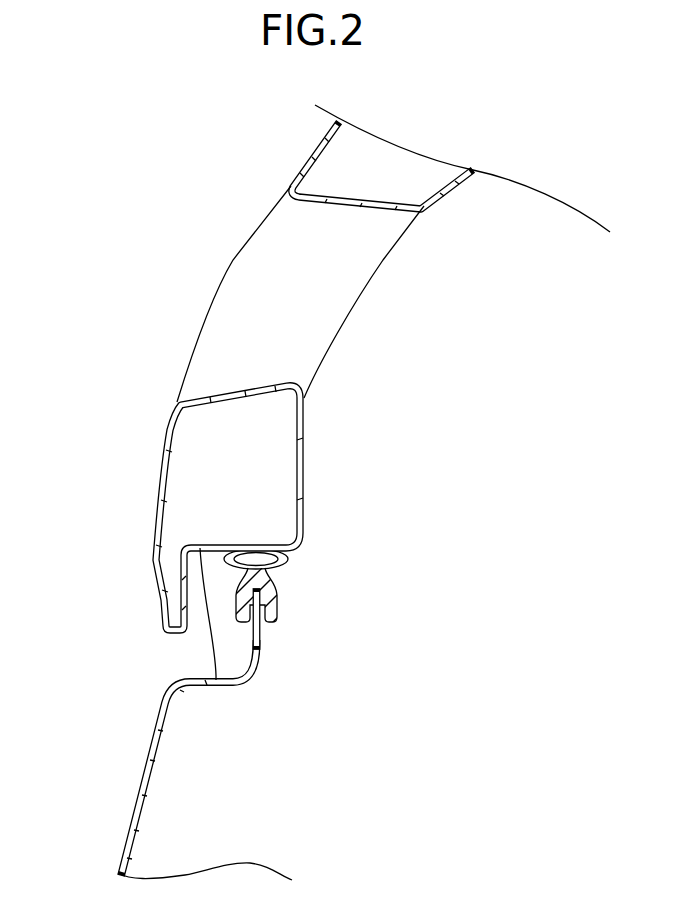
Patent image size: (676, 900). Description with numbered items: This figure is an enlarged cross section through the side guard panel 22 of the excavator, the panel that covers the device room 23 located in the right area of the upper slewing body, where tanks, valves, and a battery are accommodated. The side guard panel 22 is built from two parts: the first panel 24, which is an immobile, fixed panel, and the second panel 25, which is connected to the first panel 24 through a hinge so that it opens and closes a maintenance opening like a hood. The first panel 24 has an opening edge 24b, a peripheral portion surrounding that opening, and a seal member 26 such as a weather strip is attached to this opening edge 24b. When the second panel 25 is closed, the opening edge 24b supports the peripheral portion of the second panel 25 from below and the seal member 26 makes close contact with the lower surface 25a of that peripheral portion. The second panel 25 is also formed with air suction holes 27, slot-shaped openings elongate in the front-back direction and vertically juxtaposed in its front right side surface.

The side guard panel 22 is at (70, 431).
The device room 23 is at (467, 536).
The first panel 24 is at (153, 718).
The opening edge 24b is at (262, 637).
The second panel 25 is at (157, 470).
The lower surface 25a is at (216, 680).
The seal member 26 is at (277, 595).
The air suction holes 27 is at (260, 257).